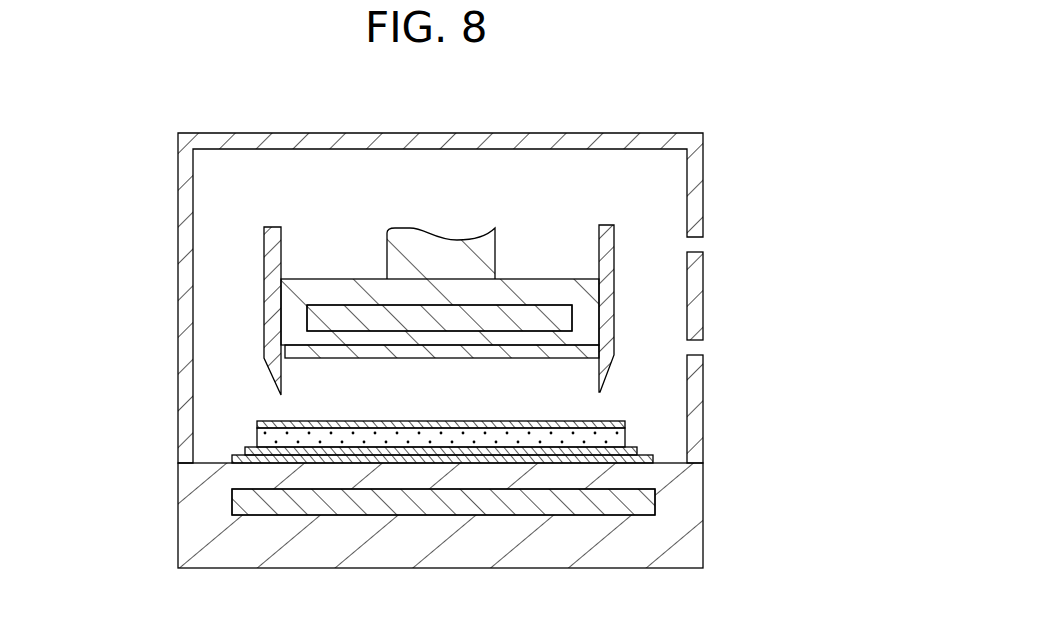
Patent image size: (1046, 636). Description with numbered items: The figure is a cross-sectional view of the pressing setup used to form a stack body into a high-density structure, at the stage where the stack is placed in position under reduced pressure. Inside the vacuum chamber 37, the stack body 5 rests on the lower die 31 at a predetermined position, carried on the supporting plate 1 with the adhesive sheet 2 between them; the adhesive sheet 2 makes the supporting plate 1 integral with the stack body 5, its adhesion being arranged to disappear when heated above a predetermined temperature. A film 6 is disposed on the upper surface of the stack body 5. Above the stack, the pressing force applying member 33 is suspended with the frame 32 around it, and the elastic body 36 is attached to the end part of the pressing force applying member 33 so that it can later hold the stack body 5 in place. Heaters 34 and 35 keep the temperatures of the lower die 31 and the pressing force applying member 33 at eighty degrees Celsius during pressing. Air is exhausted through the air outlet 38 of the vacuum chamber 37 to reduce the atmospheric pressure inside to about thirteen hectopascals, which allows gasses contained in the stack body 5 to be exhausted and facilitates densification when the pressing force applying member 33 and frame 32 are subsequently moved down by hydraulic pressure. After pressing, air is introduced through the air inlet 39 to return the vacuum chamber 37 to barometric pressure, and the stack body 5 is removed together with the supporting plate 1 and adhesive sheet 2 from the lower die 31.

The supporting plate 1 is at (232, 463).
The adhesive sheet 2 is at (247, 447).
The stack body 5 is at (618, 433).
The film 6 is at (615, 420).
The lower die 31 is at (693, 540).
The frame 32 is at (272, 288).
The pressing force applying member 33 is at (530, 288).
The heater 34 is at (237, 510).
The heater 35 is at (355, 315).
The elastic body 36 is at (313, 350).
The vacuum chamber 37 is at (185, 182).
The air outlet 38 is at (695, 242).
The air inlet 39 is at (695, 343).